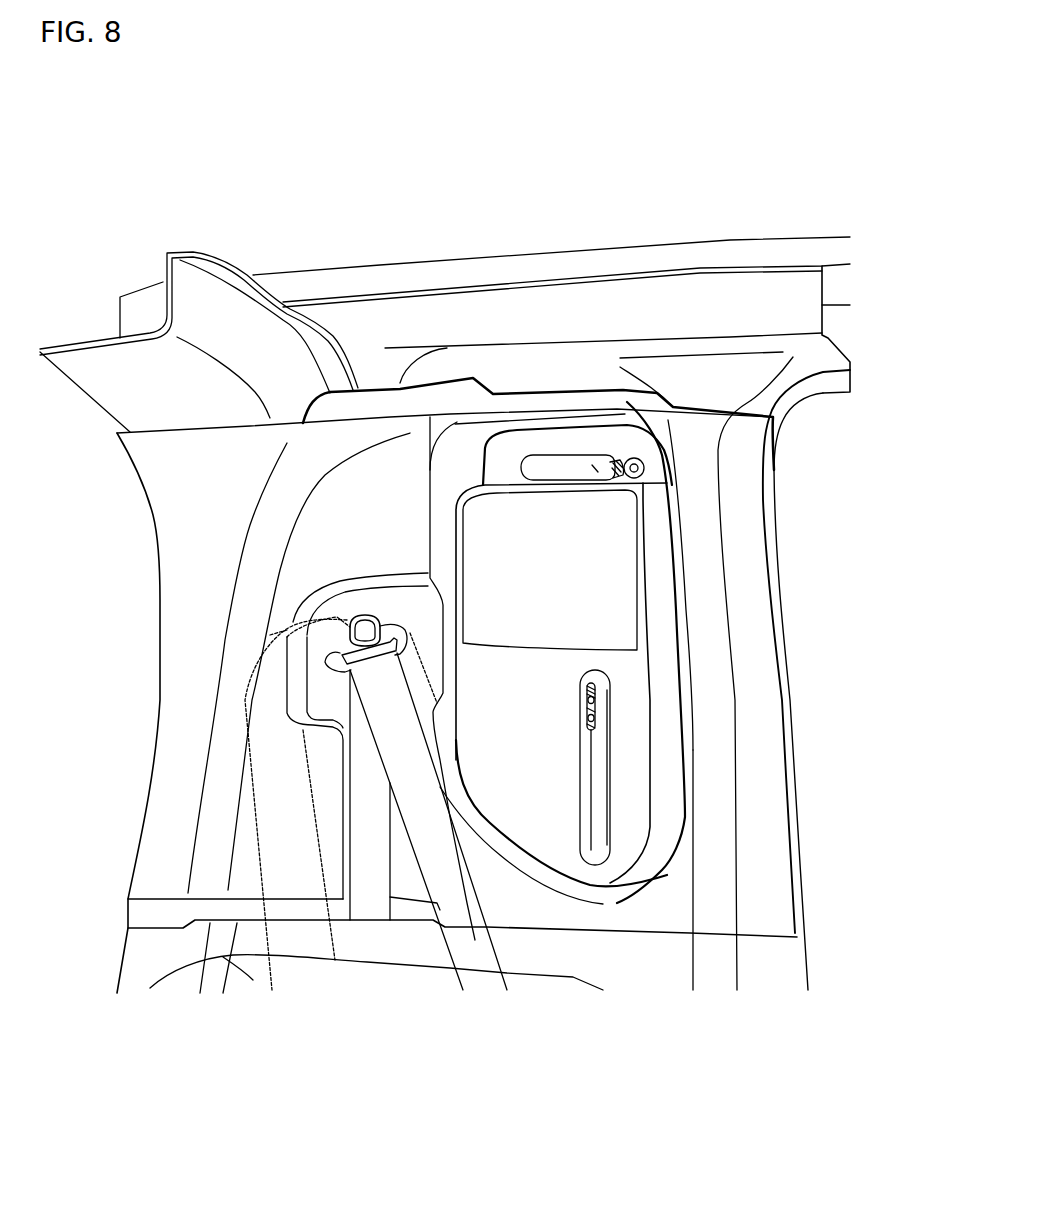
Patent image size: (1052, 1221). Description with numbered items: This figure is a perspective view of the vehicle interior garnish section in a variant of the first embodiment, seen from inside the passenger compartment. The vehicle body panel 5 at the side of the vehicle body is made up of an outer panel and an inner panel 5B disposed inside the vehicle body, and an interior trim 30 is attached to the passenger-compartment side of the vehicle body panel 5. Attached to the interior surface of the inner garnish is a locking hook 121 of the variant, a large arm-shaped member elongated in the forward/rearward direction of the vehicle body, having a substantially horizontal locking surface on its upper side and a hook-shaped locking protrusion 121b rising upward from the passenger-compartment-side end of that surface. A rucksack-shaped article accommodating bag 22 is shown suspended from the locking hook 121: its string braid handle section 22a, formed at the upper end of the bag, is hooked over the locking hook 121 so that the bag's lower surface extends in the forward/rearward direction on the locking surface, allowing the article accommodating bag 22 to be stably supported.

The vehicle body panel 5 is at (243, 285).
The inner panel 5B is at (458, 367).
The locking hook 121 is at (565, 445).
The locking protrusion 121b is at (540, 456).
The handle section 22a is at (622, 453).
The article accommodating bag 22 is at (678, 705).
The interior trim 30 is at (648, 913).